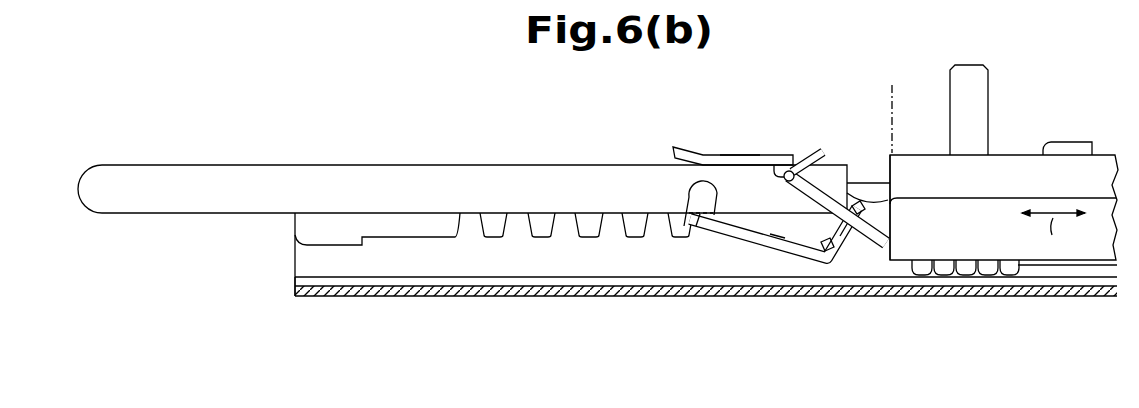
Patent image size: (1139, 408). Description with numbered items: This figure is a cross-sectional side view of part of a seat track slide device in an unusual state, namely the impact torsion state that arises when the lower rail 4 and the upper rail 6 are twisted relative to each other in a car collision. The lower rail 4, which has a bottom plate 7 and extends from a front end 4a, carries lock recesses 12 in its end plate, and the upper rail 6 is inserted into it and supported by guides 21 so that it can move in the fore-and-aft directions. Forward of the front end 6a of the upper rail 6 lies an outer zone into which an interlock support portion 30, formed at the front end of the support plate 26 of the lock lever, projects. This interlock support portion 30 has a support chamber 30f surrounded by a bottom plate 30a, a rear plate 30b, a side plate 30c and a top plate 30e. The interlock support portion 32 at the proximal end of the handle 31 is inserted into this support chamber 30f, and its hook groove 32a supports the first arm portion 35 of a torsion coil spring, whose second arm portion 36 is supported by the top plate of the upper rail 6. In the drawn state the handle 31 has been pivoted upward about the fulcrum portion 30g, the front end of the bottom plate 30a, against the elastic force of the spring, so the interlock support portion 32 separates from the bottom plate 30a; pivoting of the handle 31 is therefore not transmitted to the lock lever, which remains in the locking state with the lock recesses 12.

The handle 31 is at (381, 165).
The lower rail 4 is at (1058, 296).
The front end 4a is at (297, 297).
The bottom plate 7 is at (1010, 297).
The lock recess 12 is at (622, 226).
The upper rail 6 is at (1013, 153).
The front end 6a is at (892, 153).
The second arm portion 36 is at (1080, 143).
The guide 21 is at (965, 265).
The support plate 26 is at (878, 208).
The interlock support portion 32 is at (735, 178).
The top plate 30e is at (737, 153).
The hook groove 32a is at (776, 168).
The interlock support portion 30 is at (778, 256).
The fulcrum portion 30g is at (687, 202).
The side plate 30c is at (702, 203).
The support chamber 30f is at (777, 245).
The bottom plate 30a is at (801, 262).
The rear plate 30b is at (848, 258).
The first arm portion 35 is at (884, 234).